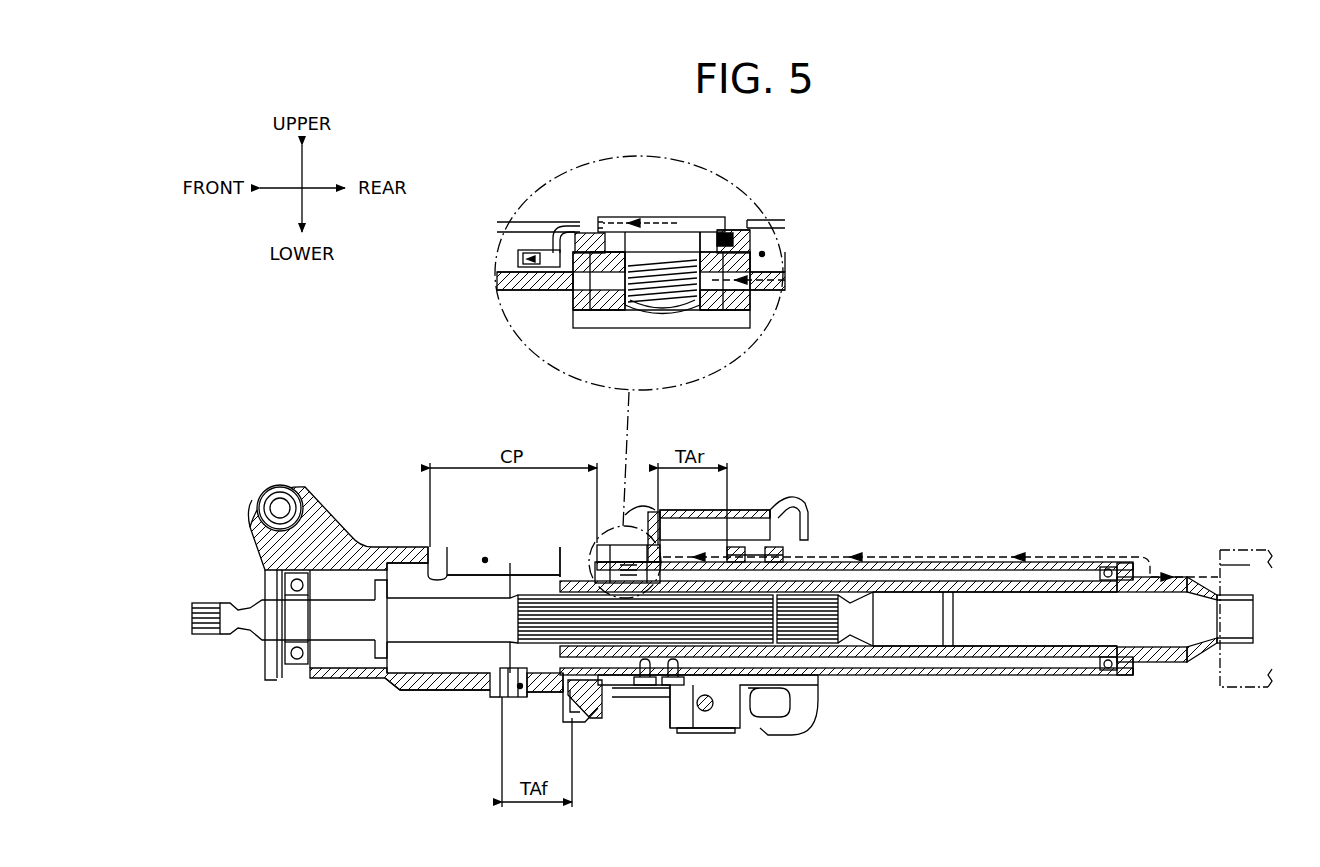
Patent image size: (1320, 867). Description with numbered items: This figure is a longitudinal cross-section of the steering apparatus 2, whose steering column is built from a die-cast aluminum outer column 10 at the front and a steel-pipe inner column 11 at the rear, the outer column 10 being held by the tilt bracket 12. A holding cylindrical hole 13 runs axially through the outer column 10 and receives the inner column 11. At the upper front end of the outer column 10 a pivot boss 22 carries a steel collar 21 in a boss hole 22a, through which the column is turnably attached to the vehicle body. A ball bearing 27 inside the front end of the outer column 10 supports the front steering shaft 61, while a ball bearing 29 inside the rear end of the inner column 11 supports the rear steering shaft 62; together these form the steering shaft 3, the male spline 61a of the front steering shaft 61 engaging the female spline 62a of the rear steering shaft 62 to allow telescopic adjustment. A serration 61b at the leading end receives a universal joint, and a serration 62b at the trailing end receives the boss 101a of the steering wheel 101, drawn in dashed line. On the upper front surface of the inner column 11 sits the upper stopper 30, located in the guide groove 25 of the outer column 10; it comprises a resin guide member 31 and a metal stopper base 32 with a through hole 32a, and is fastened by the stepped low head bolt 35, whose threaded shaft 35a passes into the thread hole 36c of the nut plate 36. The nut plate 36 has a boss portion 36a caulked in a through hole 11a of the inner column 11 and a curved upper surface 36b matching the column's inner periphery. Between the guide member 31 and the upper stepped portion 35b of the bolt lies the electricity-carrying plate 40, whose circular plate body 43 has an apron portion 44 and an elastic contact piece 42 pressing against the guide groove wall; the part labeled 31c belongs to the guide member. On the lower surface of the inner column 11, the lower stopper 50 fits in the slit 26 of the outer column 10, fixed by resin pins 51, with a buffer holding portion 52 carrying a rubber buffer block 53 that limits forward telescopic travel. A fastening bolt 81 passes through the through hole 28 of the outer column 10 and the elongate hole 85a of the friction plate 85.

The steering apparatus 2 is at (984, 485).
The steering shaft 3 is at (1151, 669).
The outer column 10 is at (381, 540).
The inner column 11 is at (770, 268).
The through hole 11a is at (712, 300).
The tilt bracket 12 is at (801, 495).
The holding cylindrical hole 13 is at (413, 691).
The collar 21 is at (263, 492).
The pivot boss 22 is at (308, 515).
The boss hole 22a is at (250, 520).
The guide groove 25 is at (764, 254).
The slit 26 is at (521, 688).
The ball bearing 27 is at (292, 664).
The through hole 28 is at (716, 709).
The ball bearing 29 is at (1101, 669).
The upper stopper 30 is at (565, 200).
The guide member 31 is at (734, 258).
The collar flange 31c is at (742, 222).
The stopper base 32 is at (740, 262).
The through hole 32a is at (698, 252).
The stepped low head bolt 35 is at (660, 214).
The threaded shaft 35a is at (665, 292).
The upper stepped portion 35b is at (603, 222).
The nut plate 36 is at (740, 320).
The boss portion 36a is at (632, 318).
The upper surface 36b is at (562, 283).
The thread hole 36c is at (648, 305).
The electricity-carrying plate 40 is at (563, 226).
The contact piece 42 is at (522, 262).
The circular plate body 43 is at (590, 233).
The apron portion 44 is at (556, 246).
The lower stopper 50 is at (686, 697).
The resin pin 51 is at (672, 684).
The buffer holding portion 52 is at (612, 694).
The buffer block 53 is at (592, 702).
The front steering shaft 61 is at (238, 640).
The male spline 61a is at (528, 632).
The serration 61b is at (204, 610).
The rear steering shaft 62 is at (913, 660).
The female spline 62a is at (826, 632).
The serration 62b is at (1238, 655).
The fastening bolt 81 is at (706, 712).
The friction plate 85 is at (799, 690).
The elongate hole 85a is at (771, 704).
The steering wheel 101 is at (1253, 550).
The boss 101a is at (1226, 568).